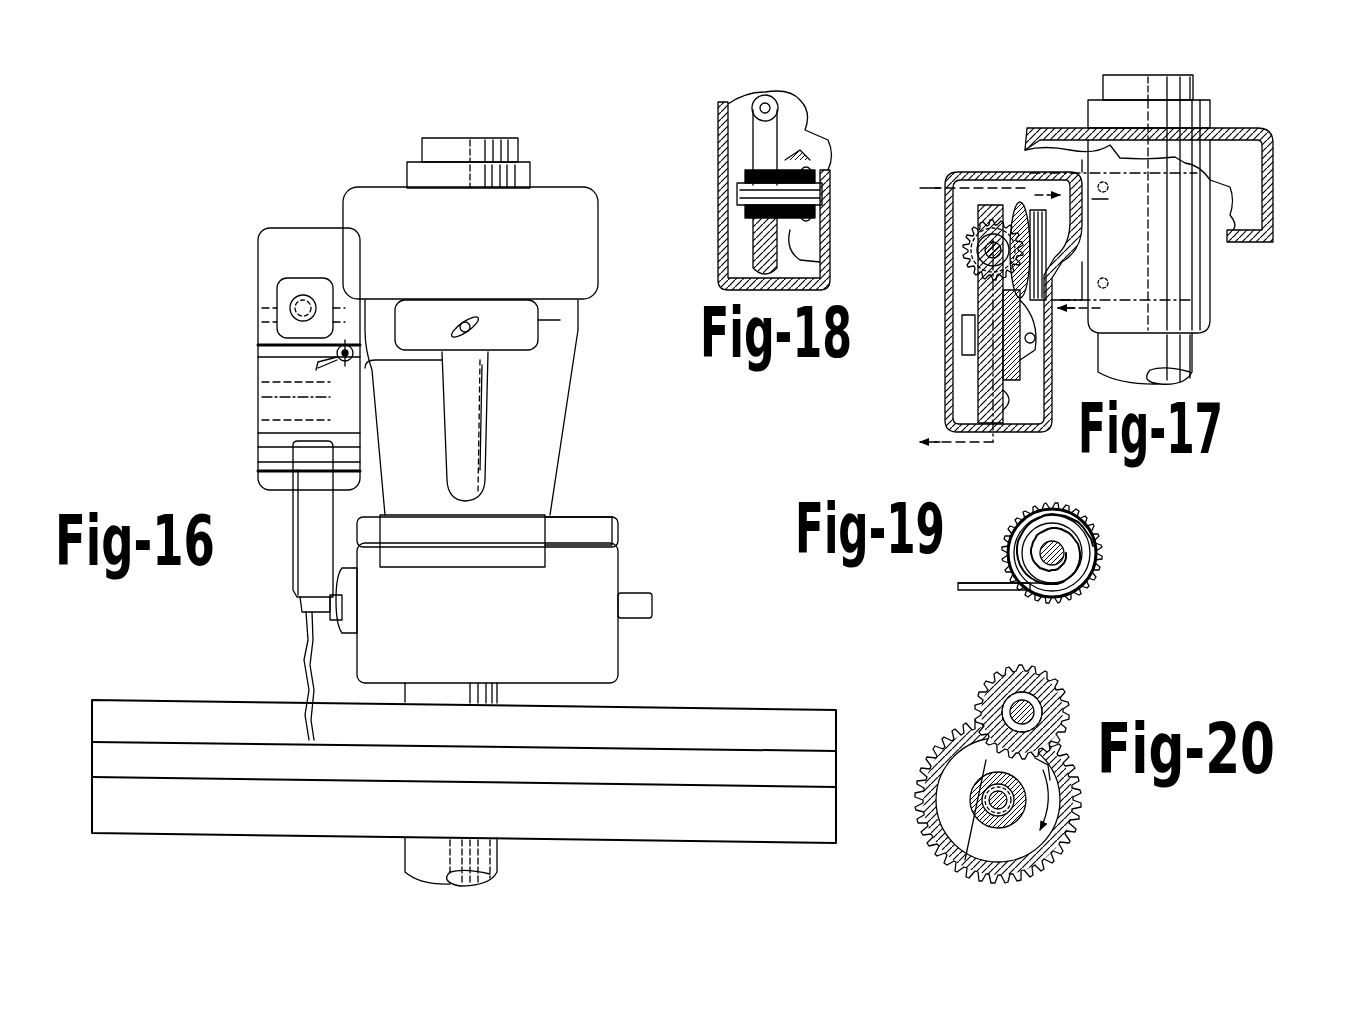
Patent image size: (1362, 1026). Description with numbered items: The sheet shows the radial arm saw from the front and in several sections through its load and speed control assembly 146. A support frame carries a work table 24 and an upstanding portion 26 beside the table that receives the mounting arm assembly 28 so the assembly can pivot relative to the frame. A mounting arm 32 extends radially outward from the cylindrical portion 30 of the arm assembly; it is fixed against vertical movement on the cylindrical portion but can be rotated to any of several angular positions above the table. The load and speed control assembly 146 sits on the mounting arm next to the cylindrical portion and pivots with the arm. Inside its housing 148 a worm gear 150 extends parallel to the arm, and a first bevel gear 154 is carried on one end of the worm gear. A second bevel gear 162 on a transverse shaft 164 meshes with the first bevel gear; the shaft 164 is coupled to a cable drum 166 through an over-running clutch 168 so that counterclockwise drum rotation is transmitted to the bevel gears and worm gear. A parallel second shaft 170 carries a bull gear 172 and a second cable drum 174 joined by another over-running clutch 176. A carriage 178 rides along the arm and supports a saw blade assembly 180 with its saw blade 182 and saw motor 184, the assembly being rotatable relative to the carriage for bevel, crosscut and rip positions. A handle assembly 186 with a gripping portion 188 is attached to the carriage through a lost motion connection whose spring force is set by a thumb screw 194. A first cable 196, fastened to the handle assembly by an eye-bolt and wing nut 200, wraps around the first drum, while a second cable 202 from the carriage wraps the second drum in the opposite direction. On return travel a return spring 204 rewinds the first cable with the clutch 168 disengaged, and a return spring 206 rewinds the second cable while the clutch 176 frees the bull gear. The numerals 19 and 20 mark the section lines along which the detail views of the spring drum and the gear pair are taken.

In FIG. 16, the work table 24 is at (683, 702).
In FIG. 16, the upstanding portion 26 is at (510, 700).
In FIG. 16, the mounting arm assembly 28 is at (540, 188).
In FIG. 17, the mounting arm assembly 28 is at (1222, 126).
In FIG. 16, the cylindrical portion 30 is at (418, 168).
In FIG. 17, the cylindrical portion 30 is at (1100, 110).
In FIG. 16, the mounting arm 32 is at (568, 240).
In FIG. 17, the mounting arm 32 is at (1264, 158).
In FIG. 16, the load and speed control assembly 146 is at (258, 238).
In FIG. 17, the load and speed control assembly 146 is at (958, 172).
In FIG. 16, the housing 148 is at (314, 238).
In FIG. 17, the housing 148 is at (1000, 172).
In FIG. 18, the worm gear 150 is at (772, 102).
In FIG. 17, the worm gear 150 is at (962, 248).
In FIG. 17, the first bevel gear 154 is at (968, 228).
In FIG. 17, the second bevel gear 162 is at (1030, 215).
In FIG. 19, the second bevel gear 162 is at (1085, 522).
In FIG. 20, the second bevel gear 162 is at (1065, 715).
In FIG. 19, the shaft 164 is at (1058, 540).
In FIG. 20, the shaft 164 is at (1002, 710).
In FIG. 17, the cable drum 166 is at (1070, 220).
In FIG. 19, the cable drum 166 is at (1012, 533).
In FIG. 20, the over-running clutch 168 is at (1060, 700).
In FIG. 18, the second shaft 170 is at (822, 190).
In FIG. 20, the second shaft 170 is at (963, 862).
In FIG. 18, the bull gear 172 is at (755, 148).
In FIG. 17, the bull gear 172 is at (1010, 425).
In FIG. 20, the bull gear 172 is at (1058, 803).
In FIG. 18, the second cable drum 174 is at (790, 158).
In FIG. 17, the second cable drum 174 is at (1028, 338).
In FIG. 20, the second cable drum 174 is at (983, 792).
In FIG. 18, the over-running clutch 176 is at (752, 225).
In FIG. 16, the carriage 178 is at (580, 330).
In FIG. 16, the saw blade assembly 180 is at (580, 517).
In FIG. 16, the saw blade 182 is at (305, 658).
In FIG. 16, the saw motor 184 is at (520, 614).
In FIG. 16, the handle assembly 186 is at (512, 352).
In FIG. 16, the gripping portion 188 is at (445, 450).
In FIG. 16, the thumb screw 194 is at (482, 322).
In FIG. 19, the first cable 196 is at (978, 592).
In FIG. 16, the wing nut 200 is at (352, 355).
In FIG. 16, the second cable 202 is at (318, 366).
In FIG. 18, the second cable 202 is at (800, 182).
In FIG. 19, the return spring 204 is at (1103, 545).
In FIG. 18, the return spring 206 is at (805, 235).
In FIG. 17, the section line 19 is at (1113, 252).
In FIG. 17, the section line 20 is at (963, 313).